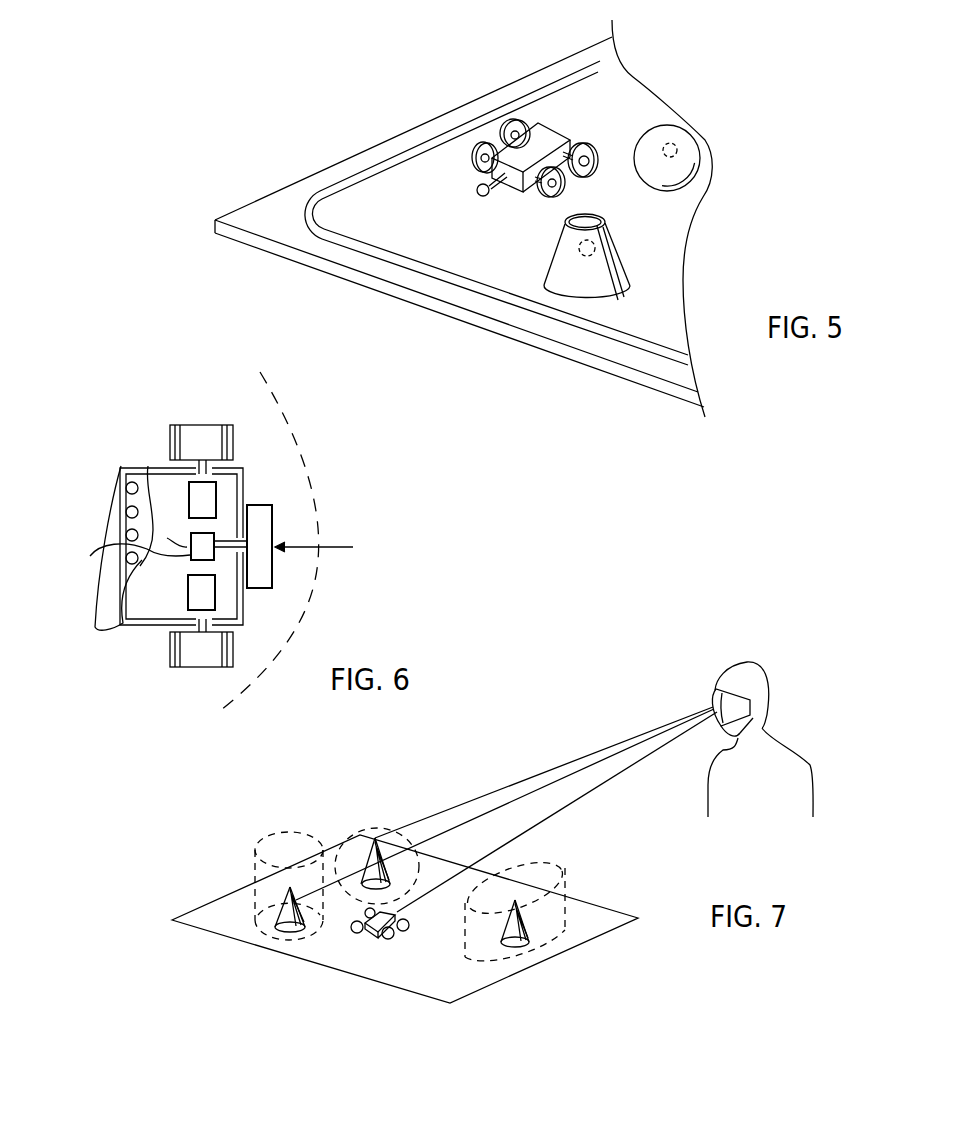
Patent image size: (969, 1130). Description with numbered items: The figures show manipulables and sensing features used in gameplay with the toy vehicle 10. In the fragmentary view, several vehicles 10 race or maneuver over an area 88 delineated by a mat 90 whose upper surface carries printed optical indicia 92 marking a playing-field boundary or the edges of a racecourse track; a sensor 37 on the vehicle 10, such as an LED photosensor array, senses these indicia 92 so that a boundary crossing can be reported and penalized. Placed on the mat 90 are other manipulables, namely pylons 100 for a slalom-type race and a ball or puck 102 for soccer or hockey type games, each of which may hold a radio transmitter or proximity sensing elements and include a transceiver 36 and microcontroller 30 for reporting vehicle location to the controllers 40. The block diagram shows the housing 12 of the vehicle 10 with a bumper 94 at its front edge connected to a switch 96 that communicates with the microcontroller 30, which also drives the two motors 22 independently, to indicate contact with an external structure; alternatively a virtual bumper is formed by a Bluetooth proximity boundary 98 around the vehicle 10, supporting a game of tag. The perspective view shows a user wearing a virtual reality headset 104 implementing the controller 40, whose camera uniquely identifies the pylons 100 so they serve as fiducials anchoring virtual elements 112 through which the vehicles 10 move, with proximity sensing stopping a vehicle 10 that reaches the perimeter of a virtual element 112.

In FIG. 5, the vehicle 10 is at (553, 125).
In FIG. 6, the vehicle 10 is at (146, 642).
In FIG. 7, the vehicle 10 is at (373, 942).
In FIG. 6, the housing 12 is at (130, 623).
In FIG. 6, the motor 22 is at (190, 498).
In FIG. 5, the microcontroller 30 is at (678, 147).
In FIG. 5, the transceiver 36 is at (679, 168).
In FIG. 5, the sensor 37 is at (480, 192).
In FIG. 7, the controller 40 is at (717, 690).
In FIG. 5, the area 88 is at (303, 106).
In FIG. 5, the mat 90 is at (280, 222).
In FIG. 7, the mat 90 is at (453, 982).
In FIG. 5, the indicia 92 is at (382, 163).
In FIG. 6, the bumper 94 is at (258, 505).
In FIG. 6, the switch 96 is at (140, 548).
In FIG. 6, the boundary 98 is at (298, 618).
In FIG. 5, the pylon 100 is at (622, 263).
In FIG. 7, the pylon 100 is at (273, 925).
In FIG. 5, the ball or puck 102 is at (702, 157).
In FIG. 7, the virtual reality headset 104 is at (554, 766).
In FIG. 7, the virtual element 112 is at (257, 873).